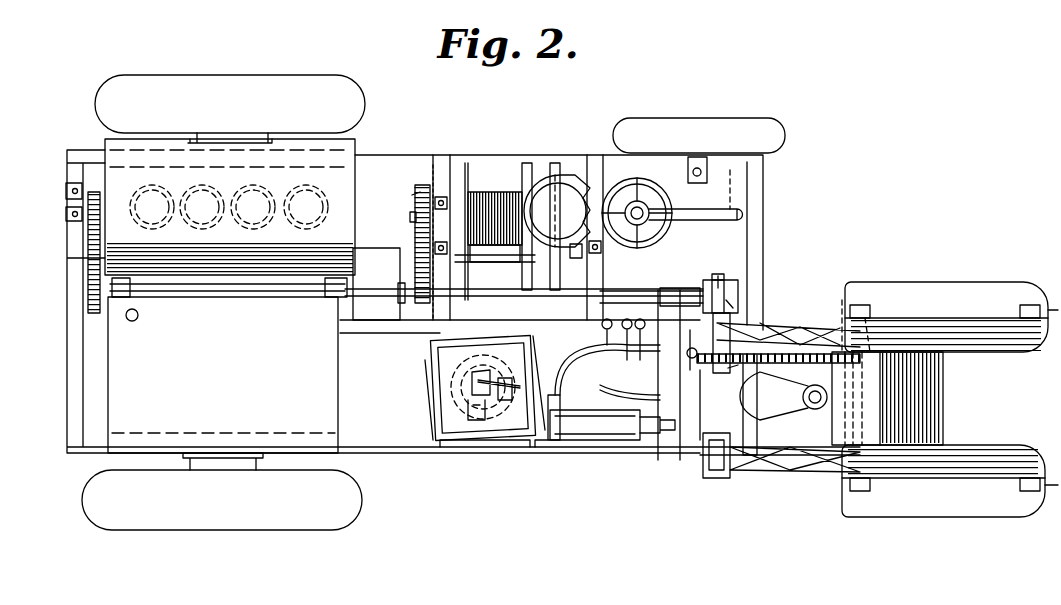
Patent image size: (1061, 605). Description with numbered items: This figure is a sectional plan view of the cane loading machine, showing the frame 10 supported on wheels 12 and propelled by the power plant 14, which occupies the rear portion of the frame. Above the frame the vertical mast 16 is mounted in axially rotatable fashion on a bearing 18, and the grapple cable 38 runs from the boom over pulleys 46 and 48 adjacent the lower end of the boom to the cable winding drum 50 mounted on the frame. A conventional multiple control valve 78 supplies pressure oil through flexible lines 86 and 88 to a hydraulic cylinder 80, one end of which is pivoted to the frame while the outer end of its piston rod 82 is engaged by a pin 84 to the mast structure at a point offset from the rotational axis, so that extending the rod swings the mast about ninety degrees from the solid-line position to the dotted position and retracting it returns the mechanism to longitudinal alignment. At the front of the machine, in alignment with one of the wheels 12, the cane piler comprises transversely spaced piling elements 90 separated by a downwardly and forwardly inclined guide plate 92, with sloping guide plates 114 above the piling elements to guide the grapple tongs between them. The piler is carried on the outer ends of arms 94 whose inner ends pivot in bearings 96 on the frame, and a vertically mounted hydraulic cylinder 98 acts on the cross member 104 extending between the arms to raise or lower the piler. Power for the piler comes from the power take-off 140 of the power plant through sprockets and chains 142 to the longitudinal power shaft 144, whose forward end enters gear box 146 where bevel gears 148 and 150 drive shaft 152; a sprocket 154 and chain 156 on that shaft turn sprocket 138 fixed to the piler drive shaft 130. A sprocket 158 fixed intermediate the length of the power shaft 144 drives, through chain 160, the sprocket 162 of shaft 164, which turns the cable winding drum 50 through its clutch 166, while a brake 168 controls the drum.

The frame 10 is at (400, 450).
The wheels 12 is at (762, 430).
The power plant 14 is at (230, 207).
The vertical mast 16 is at (520, 440).
The bearing 18 is at (448, 447).
The cable 38 is at (490, 313).
The pulley 46 is at (525, 370).
The pulley 48 is at (530, 355).
The cable winding drum 50 is at (476, 175).
The multiple control valve 78 is at (640, 308).
The hydraulic cylinder 80 is at (590, 440).
The piston rod 82 is at (556, 440).
The pin 84 is at (537, 447).
The flexible line 86 is at (565, 395).
The flexible line 88 is at (595, 392).
The piling elements 90 is at (1013, 430).
The guide plate 92 is at (925, 400).
The arms 94 is at (785, 478).
The bearings 96 is at (710, 478).
The hydraulic cylinder 98 is at (805, 405).
The cross member 104 is at (800, 320).
The guide plates 114 is at (943, 525).
The piler drive shaft 130 is at (870, 318).
The sprocket 138 is at (842, 300).
The power take-off 140 is at (72, 185).
The sprockets and chains 142 is at (88, 240).
The longitudinal power shaft 144 is at (193, 289).
The gear box 146 is at (738, 290).
The bevel gear 148 is at (718, 276).
The bevel gear 150 is at (733, 305).
The shaft 152 is at (715, 370).
The sprocket 154 is at (738, 368).
The chain 156 is at (768, 345).
The sprocket 158 is at (412, 302).
The chain 160 is at (416, 262).
The sprocket 162 is at (397, 192).
The shaft 164 is at (410, 217).
The clutch 166 is at (576, 258).
The brake 168 is at (556, 168).